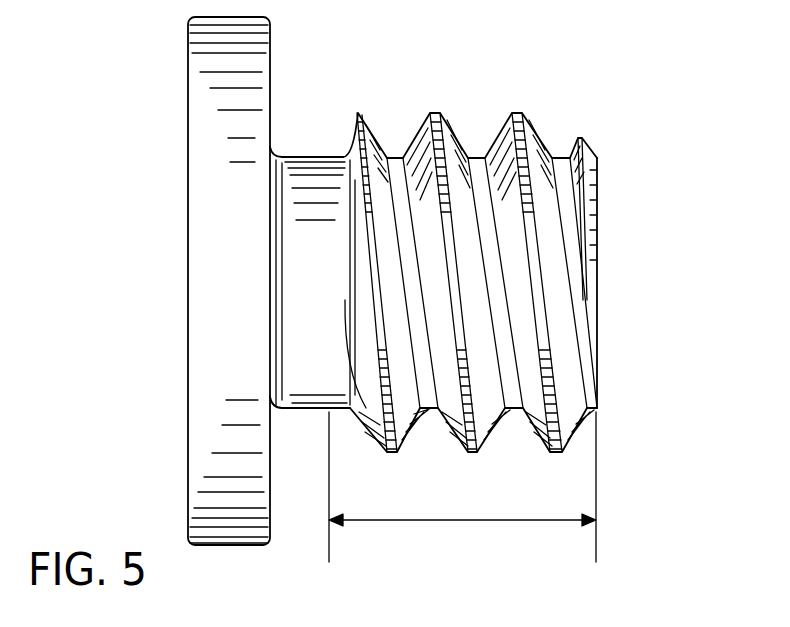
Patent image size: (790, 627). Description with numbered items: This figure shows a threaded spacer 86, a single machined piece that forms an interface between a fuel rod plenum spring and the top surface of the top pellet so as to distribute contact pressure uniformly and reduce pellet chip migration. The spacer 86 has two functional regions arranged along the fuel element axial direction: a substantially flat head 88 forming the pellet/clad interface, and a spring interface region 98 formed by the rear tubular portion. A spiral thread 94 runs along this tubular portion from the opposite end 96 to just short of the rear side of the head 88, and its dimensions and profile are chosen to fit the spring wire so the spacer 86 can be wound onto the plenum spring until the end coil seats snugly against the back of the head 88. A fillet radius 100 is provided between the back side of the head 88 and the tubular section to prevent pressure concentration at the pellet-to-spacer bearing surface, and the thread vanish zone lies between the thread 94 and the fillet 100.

The threaded spacer 86 is at (413, 92).
The flat head 88 is at (173, 355).
The spiral thread 94 is at (515, 112).
The opposite end 96 is at (598, 195).
The spring interface region 98 is at (450, 521).
The fillet radius 100 is at (276, 153).